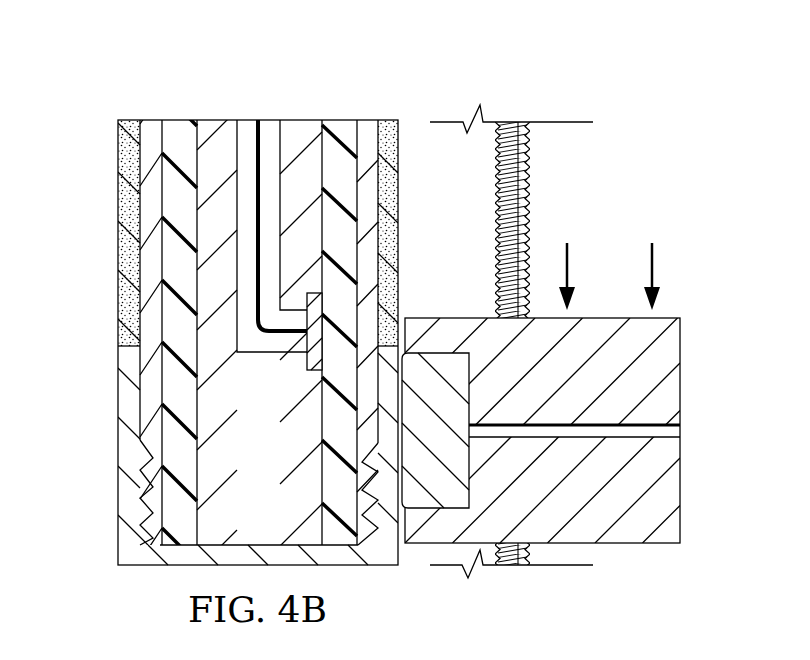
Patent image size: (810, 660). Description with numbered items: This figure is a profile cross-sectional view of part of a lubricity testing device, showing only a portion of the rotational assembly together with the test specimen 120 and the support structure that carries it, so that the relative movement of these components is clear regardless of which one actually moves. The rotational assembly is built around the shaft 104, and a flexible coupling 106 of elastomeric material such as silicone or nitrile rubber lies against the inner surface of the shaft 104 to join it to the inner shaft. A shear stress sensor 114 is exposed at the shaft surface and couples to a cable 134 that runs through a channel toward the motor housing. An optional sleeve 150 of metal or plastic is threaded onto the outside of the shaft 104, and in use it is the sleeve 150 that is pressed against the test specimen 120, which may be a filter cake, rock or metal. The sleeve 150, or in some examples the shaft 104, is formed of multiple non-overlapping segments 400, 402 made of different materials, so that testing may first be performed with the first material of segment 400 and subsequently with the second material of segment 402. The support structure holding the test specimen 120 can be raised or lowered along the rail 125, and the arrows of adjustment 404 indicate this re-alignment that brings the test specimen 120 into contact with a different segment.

The shaft 104 is at (365, 130).
The flexible coupling 106 is at (177, 120).
The shear stress sensor 114 is at (308, 364).
The test specimen 120 is at (460, 467).
The rail 125 is at (532, 185).
The cable 134 is at (263, 138).
The sleeve 150 is at (130, 120).
The segment 400 is at (108, 220).
The segment 402 is at (108, 418).
The adjustment 404 is at (569, 270).